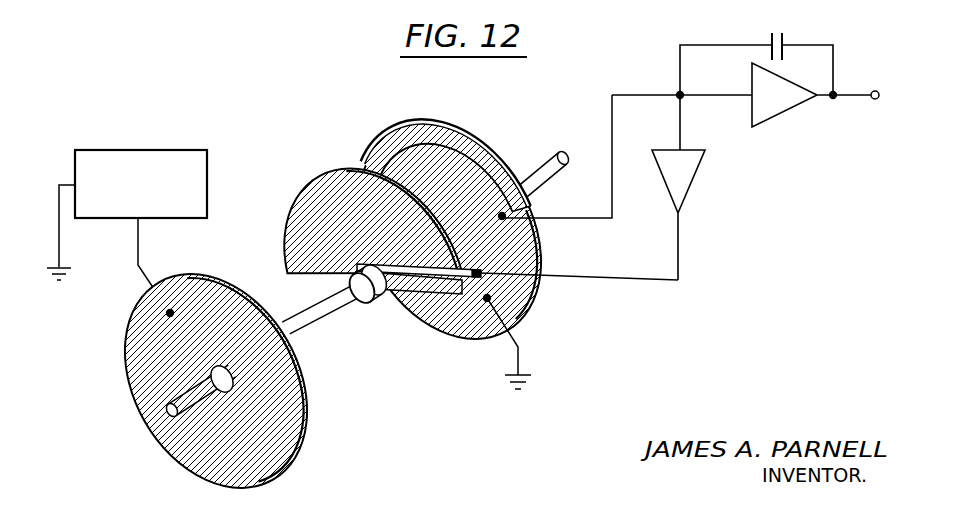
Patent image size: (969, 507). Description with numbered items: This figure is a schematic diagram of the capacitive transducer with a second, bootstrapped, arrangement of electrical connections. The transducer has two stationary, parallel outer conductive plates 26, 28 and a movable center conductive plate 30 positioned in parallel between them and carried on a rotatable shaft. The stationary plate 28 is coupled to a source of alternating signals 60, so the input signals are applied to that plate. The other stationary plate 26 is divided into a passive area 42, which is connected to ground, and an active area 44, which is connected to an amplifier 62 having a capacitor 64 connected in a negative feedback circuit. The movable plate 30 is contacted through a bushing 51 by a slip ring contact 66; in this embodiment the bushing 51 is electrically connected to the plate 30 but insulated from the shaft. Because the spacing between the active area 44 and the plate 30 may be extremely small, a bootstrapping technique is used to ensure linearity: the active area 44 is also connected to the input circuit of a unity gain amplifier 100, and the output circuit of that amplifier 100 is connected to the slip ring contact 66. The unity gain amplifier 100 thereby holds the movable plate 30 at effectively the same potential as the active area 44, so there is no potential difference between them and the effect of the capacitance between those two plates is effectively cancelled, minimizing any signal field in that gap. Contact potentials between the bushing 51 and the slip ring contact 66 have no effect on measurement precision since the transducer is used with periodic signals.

The stationary conductive plate 26 is at (431, 126).
The stationary conductive plate 28 is at (303, 448).
The movable conductive plate 30 is at (323, 172).
The passive area 42 is at (465, 318).
The active area 44 is at (469, 172).
The bushing 51 is at (360, 303).
The source of alternating signals 60 is at (150, 150).
The amplifier 62 is at (785, 113).
The capacitor 64 is at (787, 33).
The slip ring contact 66 is at (406, 266).
The unity gain amplifier 100 is at (693, 183).